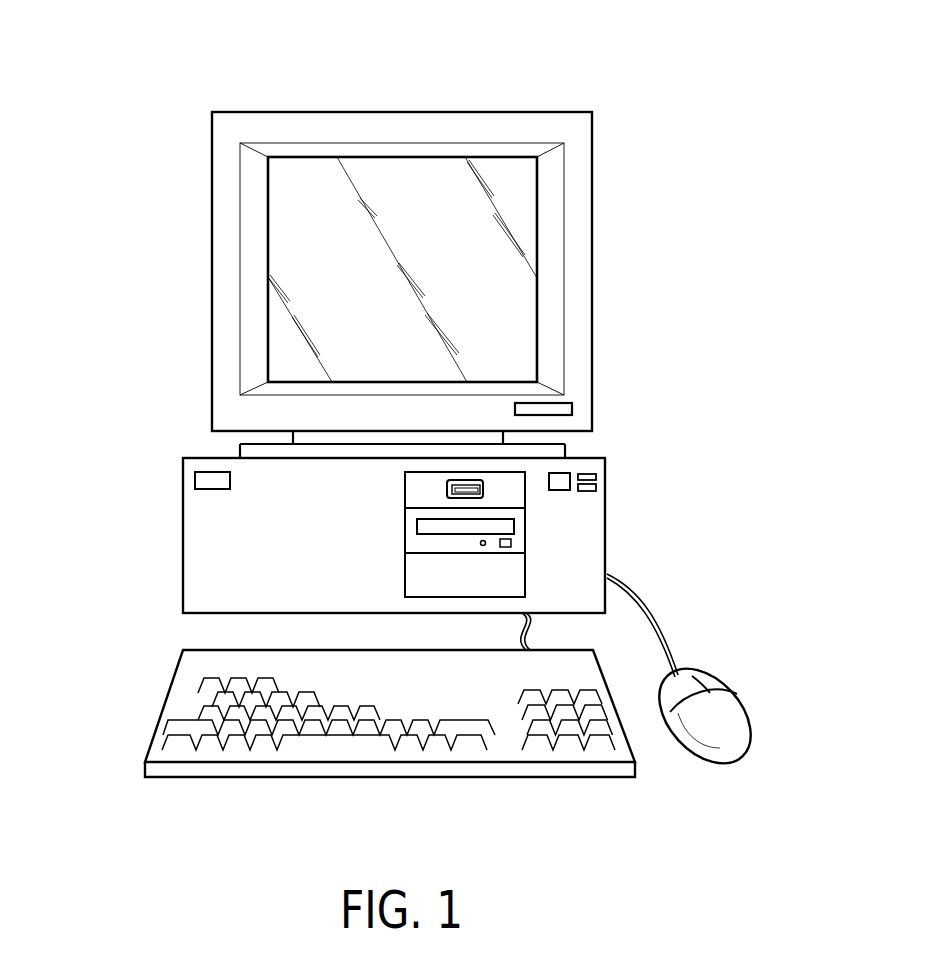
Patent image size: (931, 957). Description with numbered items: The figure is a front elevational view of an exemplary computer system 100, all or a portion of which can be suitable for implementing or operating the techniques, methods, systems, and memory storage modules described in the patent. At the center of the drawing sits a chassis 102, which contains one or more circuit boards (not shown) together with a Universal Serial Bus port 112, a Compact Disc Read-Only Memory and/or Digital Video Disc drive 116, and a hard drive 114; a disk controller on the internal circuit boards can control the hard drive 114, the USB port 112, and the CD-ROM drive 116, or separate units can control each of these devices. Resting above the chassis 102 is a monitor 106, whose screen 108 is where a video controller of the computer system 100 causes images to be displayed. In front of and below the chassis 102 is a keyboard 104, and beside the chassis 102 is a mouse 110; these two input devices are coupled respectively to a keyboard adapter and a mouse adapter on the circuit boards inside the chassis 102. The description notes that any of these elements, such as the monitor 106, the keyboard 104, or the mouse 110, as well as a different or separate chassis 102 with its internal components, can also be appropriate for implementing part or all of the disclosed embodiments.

The computer system 100 is at (583, 88).
The chassis 102 is at (183, 537).
The keyboard 104 is at (165, 702).
The monitor 106 is at (288, 112).
The screen 108 is at (318, 275).
The mouse 110 is at (725, 705).
The Universal Serial Bus (USB) port 112 is at (487, 487).
The hard drive 114 is at (517, 573).
The CD-ROM and/or DVD drive 116 is at (517, 532).